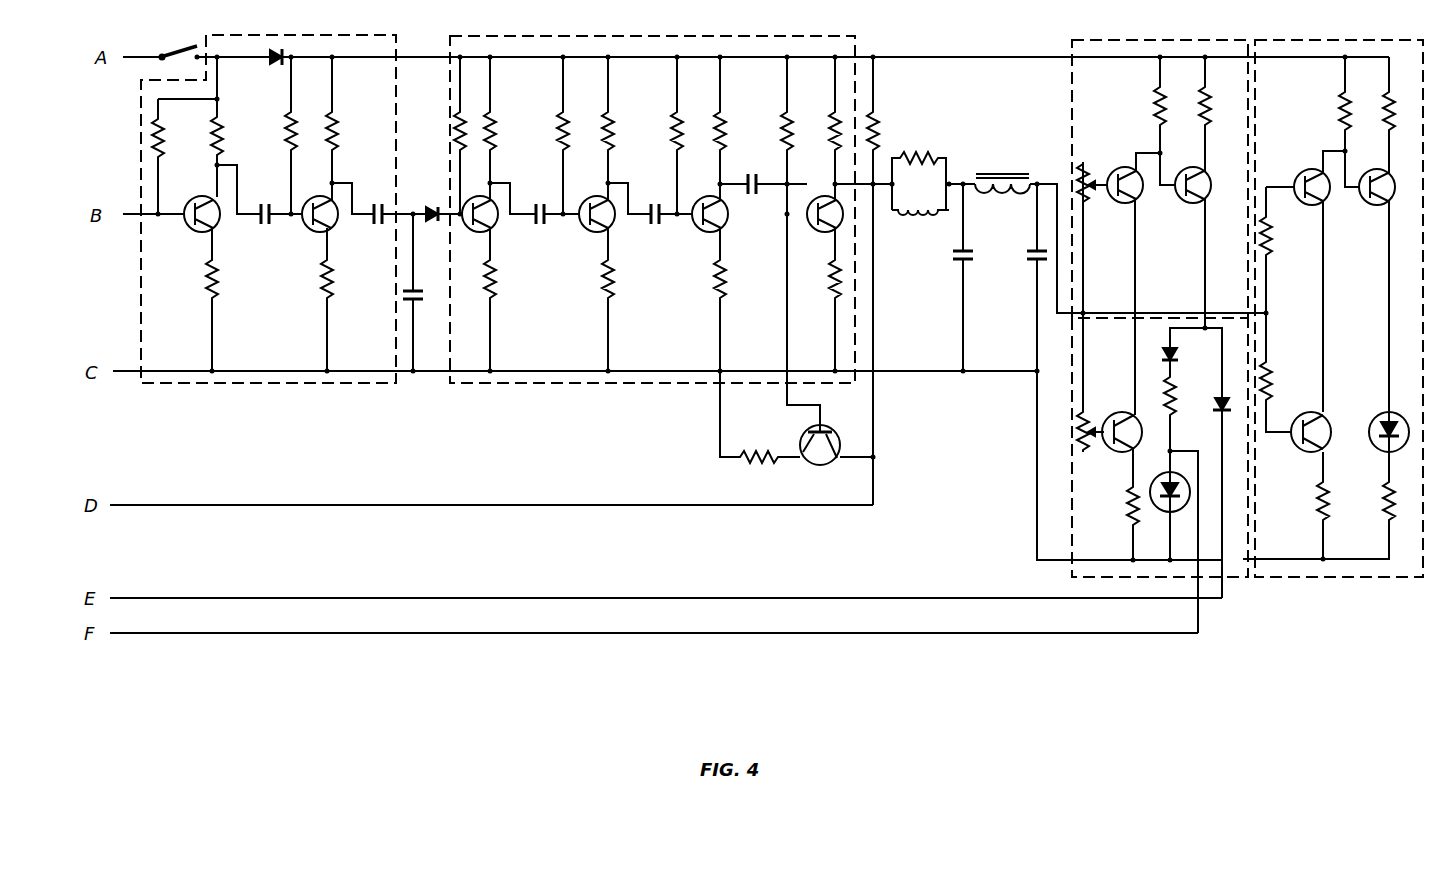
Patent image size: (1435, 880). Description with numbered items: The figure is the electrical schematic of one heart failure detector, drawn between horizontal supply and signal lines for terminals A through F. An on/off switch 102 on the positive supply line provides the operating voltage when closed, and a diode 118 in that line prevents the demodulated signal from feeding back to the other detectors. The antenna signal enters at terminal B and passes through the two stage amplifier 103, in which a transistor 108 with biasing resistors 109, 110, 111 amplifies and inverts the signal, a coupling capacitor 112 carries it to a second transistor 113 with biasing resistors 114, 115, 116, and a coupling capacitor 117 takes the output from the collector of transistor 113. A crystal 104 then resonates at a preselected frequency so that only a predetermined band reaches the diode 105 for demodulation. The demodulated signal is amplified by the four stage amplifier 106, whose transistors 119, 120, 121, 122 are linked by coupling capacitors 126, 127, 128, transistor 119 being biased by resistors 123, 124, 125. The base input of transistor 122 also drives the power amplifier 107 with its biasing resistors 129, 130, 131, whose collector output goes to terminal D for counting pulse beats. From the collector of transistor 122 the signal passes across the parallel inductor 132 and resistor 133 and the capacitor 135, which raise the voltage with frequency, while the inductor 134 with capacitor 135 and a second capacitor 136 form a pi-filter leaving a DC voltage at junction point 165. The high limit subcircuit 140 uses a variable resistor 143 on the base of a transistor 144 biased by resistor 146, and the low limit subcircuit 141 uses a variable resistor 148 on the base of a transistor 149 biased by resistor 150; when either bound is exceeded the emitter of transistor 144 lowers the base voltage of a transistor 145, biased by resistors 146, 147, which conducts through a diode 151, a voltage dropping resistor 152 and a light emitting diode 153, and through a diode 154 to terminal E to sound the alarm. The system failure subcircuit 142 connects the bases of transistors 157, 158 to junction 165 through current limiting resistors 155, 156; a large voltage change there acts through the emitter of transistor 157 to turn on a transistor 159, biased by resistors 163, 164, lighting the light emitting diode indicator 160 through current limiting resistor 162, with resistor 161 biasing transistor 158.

The on/off switch 102 is at (182, 50).
The two stage amplifier 103 is at (306, 36).
The crystal 104 is at (406, 300).
The diode 105 is at (432, 206).
The four stage amplifier 106 is at (762, 36).
The power amplifier 107 is at (815, 465).
The transistor 108 is at (216, 228).
The biasing resistor 109 is at (160, 130).
The biasing resistor 110 is at (222, 125).
The biasing resistor 111 is at (218, 290).
The coupling capacitor 112 is at (266, 200).
The second transistor 113 is at (330, 230).
The biasing resistor 114 is at (288, 128).
The biasing resistor 115 is at (334, 128).
The biasing resistor 116 is at (323, 290).
The coupling capacitor 117 is at (378, 226).
The diode 118 is at (276, 48).
The transistor 119 is at (492, 228).
The transistor 120 is at (608, 228).
The transistor 121 is at (722, 228).
The transistor 122 is at (838, 228).
The biasing resistor 123 is at (492, 275).
The biasing resistor 124 is at (460, 125).
The biasing resistor 125 is at (492, 125).
The coupling capacitor 126 is at (545, 228).
The coupling capacitor 127 is at (660, 228).
The coupling capacitor 128 is at (748, 178).
The biasing resistor 129 is at (745, 462).
The biasing resistor 130 is at (787, 120).
The biasing resistor 131 is at (876, 125).
The inductor 132 is at (928, 215).
The resistor 133 is at (912, 162).
The inductor 134 is at (1000, 178).
The capacitor 135 is at (968, 250).
The capacitor 136 is at (1032, 262).
The high limit subcircuit 140 is at (1143, 40).
The low limit subcircuit 141 is at (1078, 578).
The system failure subcircuit 142 is at (1323, 40).
The variable resistor 143 is at (1083, 225).
The transistor 144 is at (1128, 168).
The transistor 145 is at (1198, 203).
The biasing resistor 146 is at (1158, 105).
The biasing resistor 147 is at (1207, 100).
The variable resistor 148 is at (1085, 415).
The transistor 149 is at (1120, 452).
The biasing resistor 150 is at (1132, 500).
The diode 151 is at (1176, 355).
The voltage dropping resistor 152 is at (1172, 390).
The light emitting diode 153 is at (1160, 508).
The diode 154 is at (1220, 410).
The current limiting resistor 155 is at (1270, 248).
The current limiting resistor 156 is at (1266, 375).
The transistor 157 is at (1312, 170).
The transistor 158 is at (1310, 452).
The transistor 159 is at (1380, 205).
The light emitting diode indicator 160 is at (1382, 452).
The biasing resistor 161 is at (1318, 505).
The resistor 162 is at (1385, 505).
The biasing resistor 163 is at (1344, 110).
The biasing resistor 164 is at (1390, 125).
The junction point 165 is at (1085, 312).